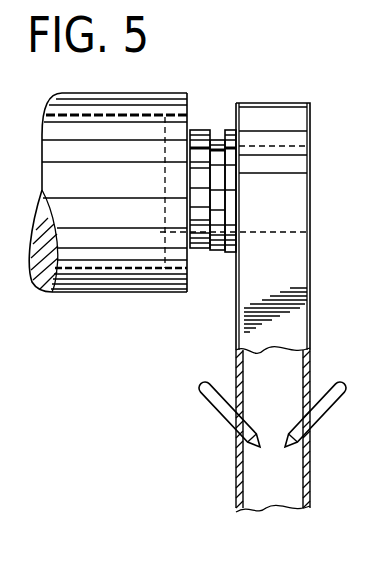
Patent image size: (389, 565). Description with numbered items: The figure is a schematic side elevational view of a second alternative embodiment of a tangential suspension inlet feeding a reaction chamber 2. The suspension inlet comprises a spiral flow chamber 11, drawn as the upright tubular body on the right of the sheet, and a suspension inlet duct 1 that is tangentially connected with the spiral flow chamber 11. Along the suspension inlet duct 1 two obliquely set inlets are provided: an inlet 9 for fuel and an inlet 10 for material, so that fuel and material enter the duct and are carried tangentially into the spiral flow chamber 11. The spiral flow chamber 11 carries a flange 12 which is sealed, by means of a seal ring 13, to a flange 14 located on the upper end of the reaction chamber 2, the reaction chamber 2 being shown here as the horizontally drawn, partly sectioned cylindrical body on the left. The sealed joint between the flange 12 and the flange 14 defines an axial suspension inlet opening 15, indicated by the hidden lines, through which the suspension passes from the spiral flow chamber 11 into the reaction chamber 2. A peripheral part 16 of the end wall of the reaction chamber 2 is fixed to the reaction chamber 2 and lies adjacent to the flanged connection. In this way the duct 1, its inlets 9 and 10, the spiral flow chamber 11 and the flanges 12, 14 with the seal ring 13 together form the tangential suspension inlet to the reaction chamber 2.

The suspension inlet duct 1 is at (240, 470).
The reaction chamber 2 is at (82, 255).
The inlet for fuel 9 is at (218, 408).
The inlet for material 10 is at (322, 407).
The spiral flow chamber 11 is at (312, 192).
The flange 12 is at (232, 252).
The seal ring 13 is at (225, 122).
The flange 14 is at (202, 140).
The axial suspension inlet opening 15 is at (190, 143).
The peripheral part of the end wall 16 is at (190, 130).